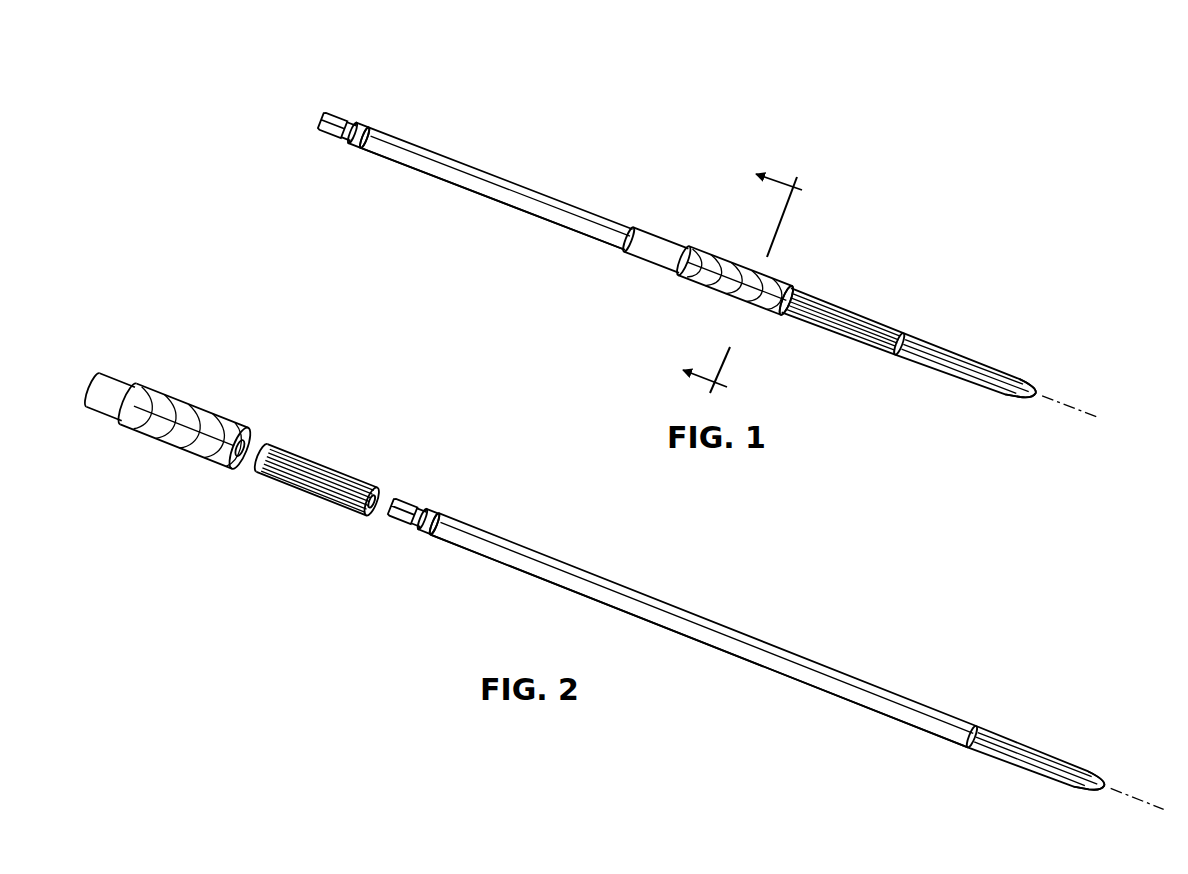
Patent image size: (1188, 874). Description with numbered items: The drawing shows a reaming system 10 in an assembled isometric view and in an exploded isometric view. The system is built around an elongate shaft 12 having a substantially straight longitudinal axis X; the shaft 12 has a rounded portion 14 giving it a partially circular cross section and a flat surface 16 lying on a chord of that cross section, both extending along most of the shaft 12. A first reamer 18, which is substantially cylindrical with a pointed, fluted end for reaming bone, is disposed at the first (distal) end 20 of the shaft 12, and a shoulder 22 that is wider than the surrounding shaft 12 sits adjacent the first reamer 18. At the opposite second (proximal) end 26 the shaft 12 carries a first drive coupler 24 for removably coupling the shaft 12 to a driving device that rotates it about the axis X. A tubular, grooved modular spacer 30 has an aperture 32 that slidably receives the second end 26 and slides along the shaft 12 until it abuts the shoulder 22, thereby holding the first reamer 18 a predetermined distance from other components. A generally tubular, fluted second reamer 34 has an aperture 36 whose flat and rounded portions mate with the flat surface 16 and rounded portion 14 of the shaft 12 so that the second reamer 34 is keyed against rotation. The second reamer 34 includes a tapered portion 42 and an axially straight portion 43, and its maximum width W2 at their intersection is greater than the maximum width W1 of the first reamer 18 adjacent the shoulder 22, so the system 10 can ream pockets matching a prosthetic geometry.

In FIG. 1, the reaming system 10 is at (566, 112).
In FIG. 2, the reaming system 10 is at (536, 500).
In FIG. 1, the shaft 12 is at (577, 228).
In FIG. 2, the shaft 12 is at (640, 613).
In FIG. 1, the rounded portion 14 is at (443, 182).
In FIG. 2, the rounded portion 14 is at (768, 670).
In FIG. 1, the flat surface 16 is at (470, 170).
In FIG. 2, the flat surface 16 is at (792, 658).
In FIG. 1, the first reamer 18 is at (970, 378).
In FIG. 2, the first reamer 18 is at (1030, 753).
In FIG. 1, the first (distal) end 20 is at (1037, 400).
In FIG. 2, the first (distal) end 20 is at (1102, 772).
In FIG. 1, the shoulder 22 is at (907, 340).
In FIG. 2, the shoulder 22 is at (974, 725).
In FIG. 1, the first drive coupler 24 is at (352, 120).
In FIG. 2, the first drive coupler 24 is at (421, 502).
In FIG. 1, the second (proximal) end 26 is at (325, 112).
In FIG. 2, the second (proximal) end 26 is at (395, 504).
In FIG. 1, the modular spacer 30 is at (833, 317).
In FIG. 2, the modular spacer 30 is at (317, 478).
In FIG. 2, the aperture 32 is at (382, 503).
In FIG. 1, the second reamer 34 is at (737, 287).
In FIG. 2, the second reamer 34 is at (183, 413).
In FIG. 2, the aperture 36 is at (247, 455).
In FIG. 1, the tapered portion 42 is at (783, 287).
In FIG. 1, the axially straight portion 43 is at (648, 245).
In FIG. 2, the axially straight portion 43 is at (113, 390).
In FIG. 1, the maximum width of first reamer W1 is at (897, 397).
In FIG. 1, the maximum width of second reamer W2 is at (667, 318).